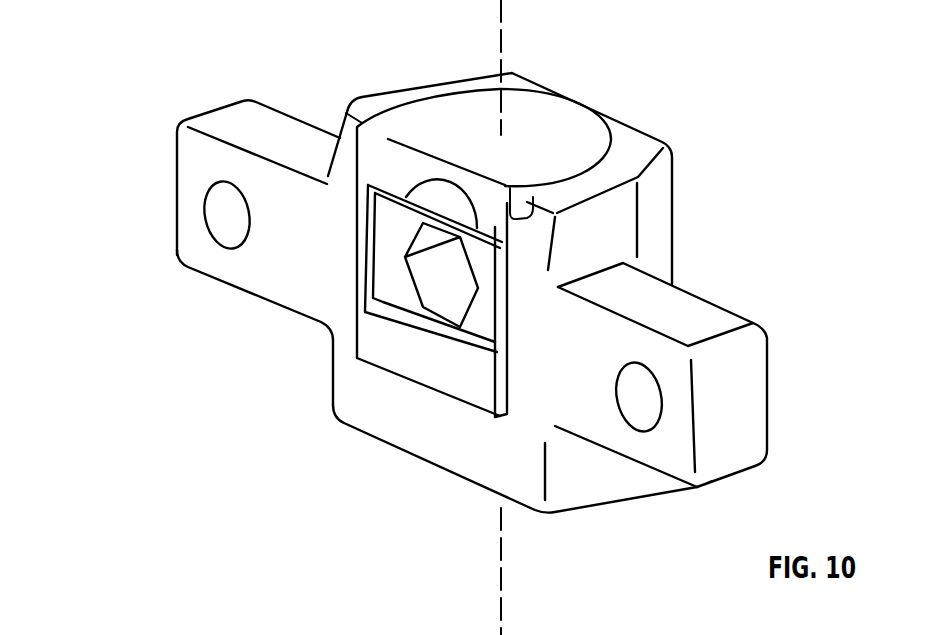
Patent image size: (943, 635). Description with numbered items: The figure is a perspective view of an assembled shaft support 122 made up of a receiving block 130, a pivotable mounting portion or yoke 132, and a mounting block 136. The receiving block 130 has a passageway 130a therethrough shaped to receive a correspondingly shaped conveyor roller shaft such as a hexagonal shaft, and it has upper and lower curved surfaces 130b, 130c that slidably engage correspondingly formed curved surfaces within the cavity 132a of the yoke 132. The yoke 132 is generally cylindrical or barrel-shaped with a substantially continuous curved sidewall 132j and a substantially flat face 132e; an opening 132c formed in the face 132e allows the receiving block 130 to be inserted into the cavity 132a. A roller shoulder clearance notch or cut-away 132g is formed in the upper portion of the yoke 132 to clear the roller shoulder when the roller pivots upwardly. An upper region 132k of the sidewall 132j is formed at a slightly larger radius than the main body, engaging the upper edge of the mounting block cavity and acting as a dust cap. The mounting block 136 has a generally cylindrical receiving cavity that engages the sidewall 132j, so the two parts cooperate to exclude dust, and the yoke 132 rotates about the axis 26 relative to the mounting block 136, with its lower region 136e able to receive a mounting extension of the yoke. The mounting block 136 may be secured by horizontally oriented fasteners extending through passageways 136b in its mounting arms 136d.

The shaft support 122 is at (189, 30).
The axis 26 is at (505, 563).
The receiving block 130 is at (390, 267).
The passageway 130a is at (433, 277).
The upper curved surface 130b is at (367, 195).
The lower curved surface 130c is at (415, 322).
The yoke 132 is at (563, 114).
The cavity 132a is at (367, 241).
The opening 132c is at (458, 345).
The flat face 132e is at (417, 365).
The roller shoulder clearance notch 132g is at (440, 182).
The curved sidewall 132j is at (612, 127).
The upper region of sidewall 132k is at (537, 201).
The mounting block 136 is at (673, 200).
The passageways 136b is at (227, 215).
The mounting arms 136d is at (240, 117).
The lower region 136e is at (495, 453).